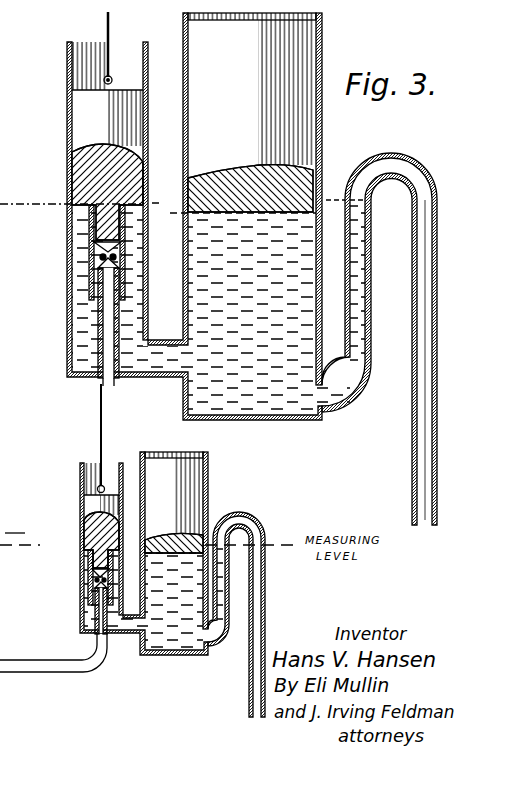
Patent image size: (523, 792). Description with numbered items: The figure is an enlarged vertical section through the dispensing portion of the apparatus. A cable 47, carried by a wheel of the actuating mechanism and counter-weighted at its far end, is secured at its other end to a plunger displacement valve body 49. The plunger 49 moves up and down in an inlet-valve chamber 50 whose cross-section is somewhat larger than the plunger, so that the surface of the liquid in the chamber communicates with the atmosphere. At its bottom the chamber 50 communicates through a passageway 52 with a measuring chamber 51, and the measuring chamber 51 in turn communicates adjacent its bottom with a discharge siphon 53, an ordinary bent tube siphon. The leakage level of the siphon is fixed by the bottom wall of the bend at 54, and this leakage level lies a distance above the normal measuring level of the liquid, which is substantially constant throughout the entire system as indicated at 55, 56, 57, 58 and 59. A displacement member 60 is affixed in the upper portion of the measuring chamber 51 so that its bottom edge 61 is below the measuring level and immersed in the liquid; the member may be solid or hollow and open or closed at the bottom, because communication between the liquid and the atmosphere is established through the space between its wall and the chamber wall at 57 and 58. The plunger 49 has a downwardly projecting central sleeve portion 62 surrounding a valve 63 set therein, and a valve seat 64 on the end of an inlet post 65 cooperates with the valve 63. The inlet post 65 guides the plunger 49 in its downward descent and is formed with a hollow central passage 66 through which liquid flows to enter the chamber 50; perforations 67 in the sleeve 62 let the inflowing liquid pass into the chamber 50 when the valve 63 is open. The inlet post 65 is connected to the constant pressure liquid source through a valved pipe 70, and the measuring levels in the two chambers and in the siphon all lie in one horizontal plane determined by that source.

The cable 47 is at (105, 22).
The plunger displacement valve body 49 is at (88, 133).
The inlet-valve chamber 50 is at (72, 173).
The measuring chamber 51 is at (322, 172).
The passageway 52 is at (165, 348).
The discharge siphon 53 is at (432, 159).
The bottom wall of the bend 54 is at (394, 183).
The measuring level 55 is at (72, 204).
The measuring level 56 is at (148, 205).
The measuring level 57 is at (180, 204).
The measuring level 58 is at (351, 207).
The measuring level 59 is at (352, 202).
The displacement member 60 is at (322, 52).
The bottom edge 61 is at (248, 216).
The central sleeve portion 62 is at (90, 222).
The valve 63 is at (100, 242).
The valve seat 64 is at (106, 262).
The inlet post 65 is at (100, 318).
The hollow central passage 66 is at (108, 345).
The perforations 67 is at (103, 257).
The pipe 70 is at (60, 677).